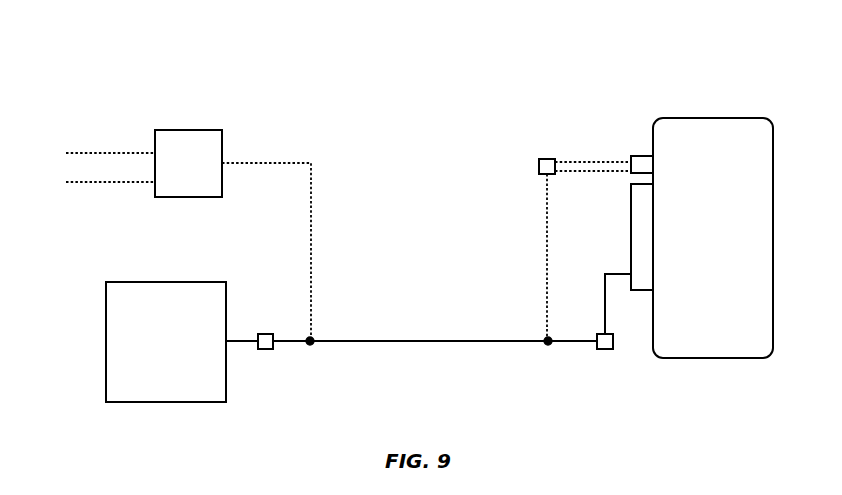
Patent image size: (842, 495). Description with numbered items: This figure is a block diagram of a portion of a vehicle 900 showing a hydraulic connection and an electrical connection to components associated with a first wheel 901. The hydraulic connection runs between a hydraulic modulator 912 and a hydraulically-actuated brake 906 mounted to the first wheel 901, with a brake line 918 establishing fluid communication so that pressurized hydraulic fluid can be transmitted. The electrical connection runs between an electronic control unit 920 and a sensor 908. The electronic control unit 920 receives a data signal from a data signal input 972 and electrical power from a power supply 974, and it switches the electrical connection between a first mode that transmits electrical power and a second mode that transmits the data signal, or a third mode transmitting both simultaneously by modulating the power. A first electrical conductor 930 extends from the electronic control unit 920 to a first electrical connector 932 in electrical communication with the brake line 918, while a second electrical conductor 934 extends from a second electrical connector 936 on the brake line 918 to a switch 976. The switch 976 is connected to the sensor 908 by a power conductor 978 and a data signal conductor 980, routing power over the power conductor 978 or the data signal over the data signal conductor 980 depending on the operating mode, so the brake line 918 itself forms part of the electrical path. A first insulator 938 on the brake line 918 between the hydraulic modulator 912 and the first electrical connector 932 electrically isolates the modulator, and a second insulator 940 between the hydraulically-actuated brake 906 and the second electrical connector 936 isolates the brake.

The vehicle 900 is at (98, 62).
The first wheel 901 is at (735, 117).
The hydraulically-actuated brake 906 is at (630, 253).
The sensor 908 is at (645, 155).
The hydraulic modulator 912 is at (186, 354).
The brake line 918 is at (395, 341).
The electronic control unit 920 is at (207, 176).
The first electrical conductor 930 is at (288, 163).
The first electrical connector 932 is at (312, 343).
The second electrical conductor 934 is at (545, 207).
The second electrical connector 936 is at (547, 345).
The first insulator 938 is at (264, 349).
The second insulator 940 is at (606, 350).
The data signal input 972 is at (100, 153).
The power supply 974 is at (124, 182).
The switch 976 is at (538, 166).
The power conductor 978 is at (615, 158).
The data signal conductor 980 is at (563, 173).